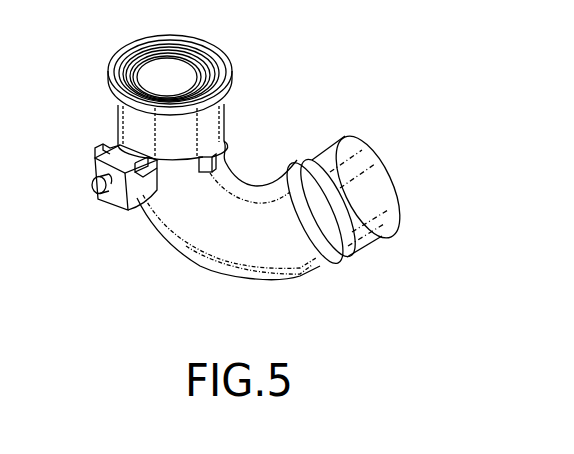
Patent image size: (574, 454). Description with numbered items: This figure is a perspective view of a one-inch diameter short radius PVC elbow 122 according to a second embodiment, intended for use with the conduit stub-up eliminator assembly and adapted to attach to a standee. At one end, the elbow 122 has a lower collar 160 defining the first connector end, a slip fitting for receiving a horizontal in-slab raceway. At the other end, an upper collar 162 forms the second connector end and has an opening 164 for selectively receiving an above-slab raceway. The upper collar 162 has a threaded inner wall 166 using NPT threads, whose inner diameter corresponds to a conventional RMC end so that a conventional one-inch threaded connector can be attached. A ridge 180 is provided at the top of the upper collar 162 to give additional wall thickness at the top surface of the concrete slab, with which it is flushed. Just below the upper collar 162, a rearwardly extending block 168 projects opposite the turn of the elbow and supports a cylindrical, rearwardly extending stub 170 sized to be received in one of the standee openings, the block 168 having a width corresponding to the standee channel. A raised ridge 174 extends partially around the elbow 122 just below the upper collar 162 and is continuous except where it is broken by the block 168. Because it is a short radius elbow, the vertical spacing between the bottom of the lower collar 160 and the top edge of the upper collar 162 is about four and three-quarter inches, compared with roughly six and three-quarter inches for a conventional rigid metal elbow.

The elbow 122 is at (210, 275).
The lower collar 160 is at (380, 233).
The upper collar 162 is at (217, 115).
The opening 164 is at (190, 67).
The threaded inner wall 166 is at (150, 63).
The block 168 is at (116, 211).
The stub 170 is at (94, 188).
The raised ridge 174 is at (225, 160).
The ridge 180 is at (119, 92).